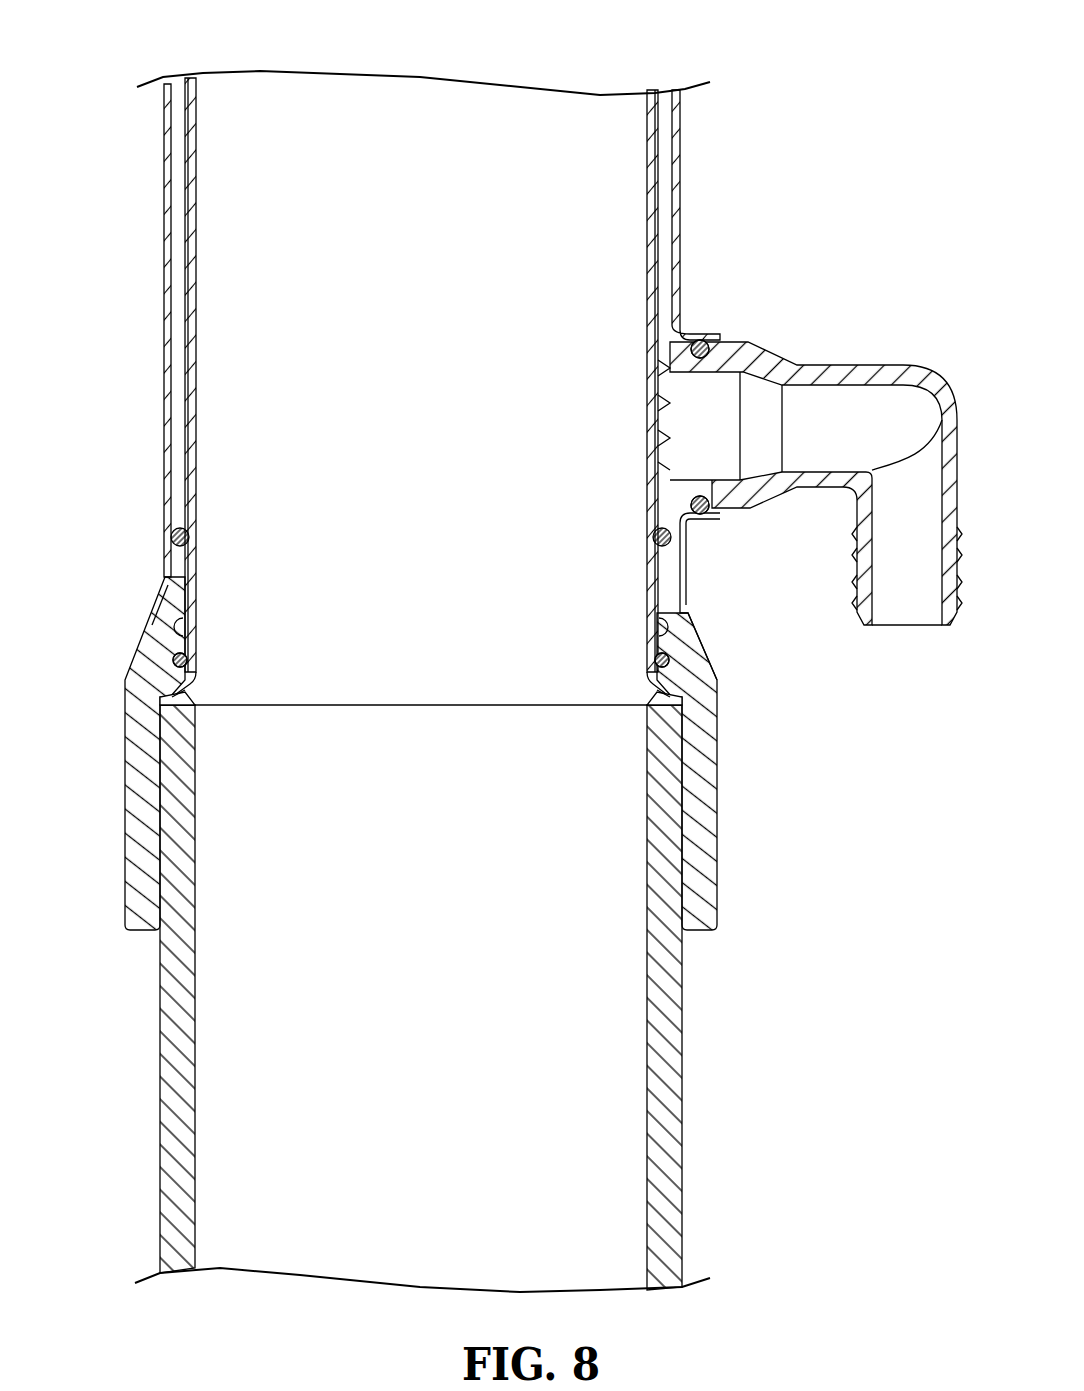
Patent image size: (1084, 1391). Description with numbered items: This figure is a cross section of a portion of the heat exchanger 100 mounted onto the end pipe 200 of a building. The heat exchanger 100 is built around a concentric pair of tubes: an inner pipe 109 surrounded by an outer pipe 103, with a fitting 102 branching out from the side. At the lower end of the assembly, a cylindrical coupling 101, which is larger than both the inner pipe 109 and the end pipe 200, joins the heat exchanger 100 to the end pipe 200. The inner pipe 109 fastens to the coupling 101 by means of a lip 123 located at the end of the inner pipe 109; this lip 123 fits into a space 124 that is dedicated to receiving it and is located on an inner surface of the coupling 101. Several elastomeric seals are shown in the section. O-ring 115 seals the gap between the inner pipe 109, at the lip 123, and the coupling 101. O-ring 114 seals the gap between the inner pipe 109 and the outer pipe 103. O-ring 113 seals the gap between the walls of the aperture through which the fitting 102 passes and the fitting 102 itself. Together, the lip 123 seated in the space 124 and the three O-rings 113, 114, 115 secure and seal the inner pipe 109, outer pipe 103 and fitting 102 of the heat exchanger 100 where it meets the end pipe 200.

The heat exchanger 100 is at (849, 65).
The coupling 101 is at (720, 792).
The fitting 102 is at (830, 365).
The outer pipe 103 is at (165, 430).
The inner pipe 109 is at (225, 393).
The O-ring 113 is at (704, 340).
The O-ring 114 is at (172, 537).
The O-ring 115 is at (174, 661).
The lip 123 is at (182, 698).
The space 124 is at (684, 688).
The end pipe 200 is at (160, 1048).